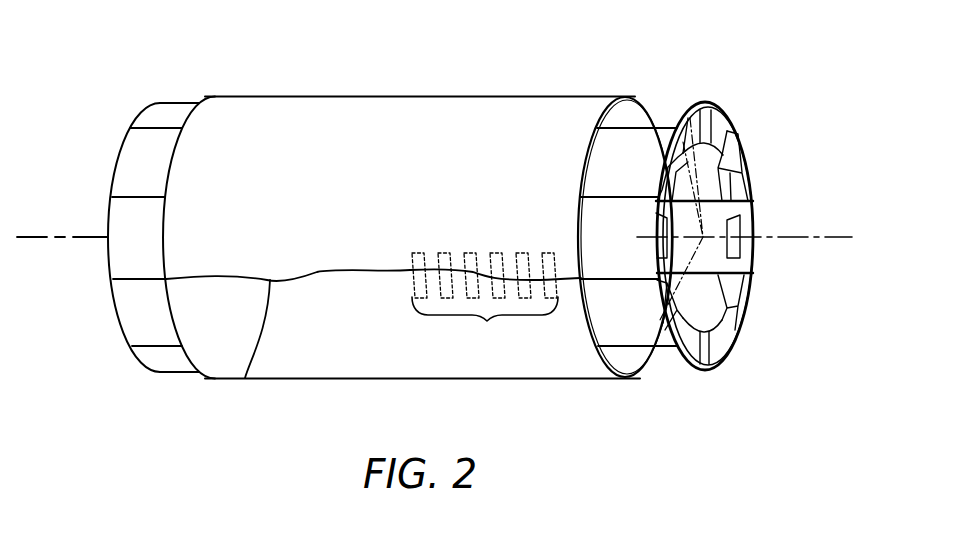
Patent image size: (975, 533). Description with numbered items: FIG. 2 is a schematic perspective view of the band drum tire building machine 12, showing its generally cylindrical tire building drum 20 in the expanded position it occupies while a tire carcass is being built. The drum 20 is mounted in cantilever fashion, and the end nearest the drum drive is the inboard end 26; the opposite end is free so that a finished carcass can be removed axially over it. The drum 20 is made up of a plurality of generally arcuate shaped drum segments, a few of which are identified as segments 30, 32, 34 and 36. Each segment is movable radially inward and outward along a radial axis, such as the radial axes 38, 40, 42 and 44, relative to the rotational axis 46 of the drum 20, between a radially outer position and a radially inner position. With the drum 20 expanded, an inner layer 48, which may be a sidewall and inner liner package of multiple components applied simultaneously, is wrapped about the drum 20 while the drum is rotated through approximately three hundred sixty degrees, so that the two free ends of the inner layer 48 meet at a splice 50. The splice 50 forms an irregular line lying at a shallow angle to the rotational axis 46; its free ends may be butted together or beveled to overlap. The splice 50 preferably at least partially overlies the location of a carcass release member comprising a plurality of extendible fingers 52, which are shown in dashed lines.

The band drum tire building machine 12 is at (189, 53).
The tire building drum 20 is at (168, 360).
The inboard end 26 is at (118, 330).
The drum segment 30 is at (682, 118).
The drum segment 32 is at (683, 140).
The drum segment 34 is at (650, 230).
The drum segment 36 is at (667, 327).
The radial axis 38 is at (700, 183).
The radial axis 40 is at (745, 206).
The radial axis 42 is at (752, 273).
The radial axis 44 is at (680, 285).
The rotational axis 46 is at (836, 236).
The inner layer 48 is at (287, 363).
The splice 50 is at (245, 378).
The extendible fingers 52 is at (487, 321).